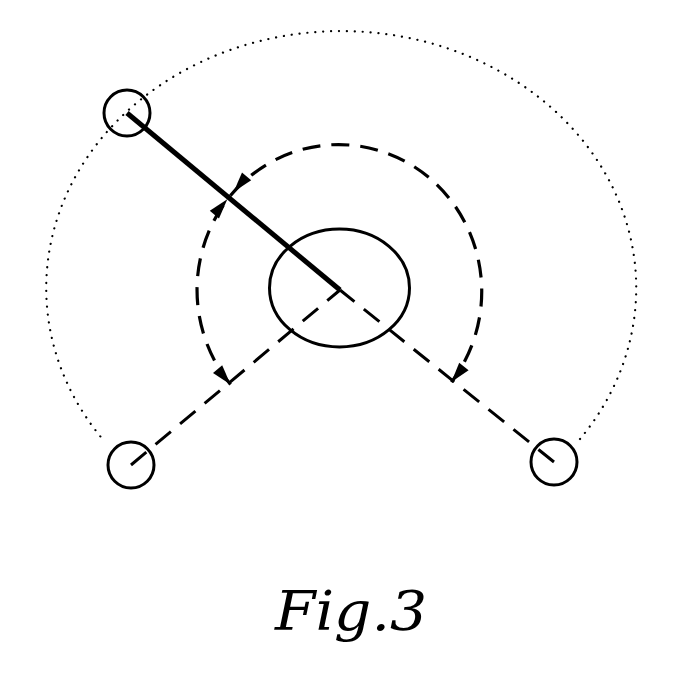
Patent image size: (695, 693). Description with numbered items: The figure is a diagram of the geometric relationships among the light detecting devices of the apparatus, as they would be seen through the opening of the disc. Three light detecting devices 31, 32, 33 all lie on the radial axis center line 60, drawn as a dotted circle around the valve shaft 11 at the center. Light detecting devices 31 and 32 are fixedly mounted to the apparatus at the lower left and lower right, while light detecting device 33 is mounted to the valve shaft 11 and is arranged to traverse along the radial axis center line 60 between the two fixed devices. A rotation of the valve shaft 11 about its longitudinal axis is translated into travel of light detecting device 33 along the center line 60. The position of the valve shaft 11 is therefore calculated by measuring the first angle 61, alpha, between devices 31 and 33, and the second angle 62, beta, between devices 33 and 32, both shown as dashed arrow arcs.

The valve shaft 11 is at (347, 229).
The light detecting device 31 is at (113, 477).
The light detecting device 32 is at (573, 478).
The light detecting device 33 is at (106, 95).
The radial axis center line 60 is at (558, 118).
The first angle 61 is at (197, 299).
The second angle 62 is at (483, 262).